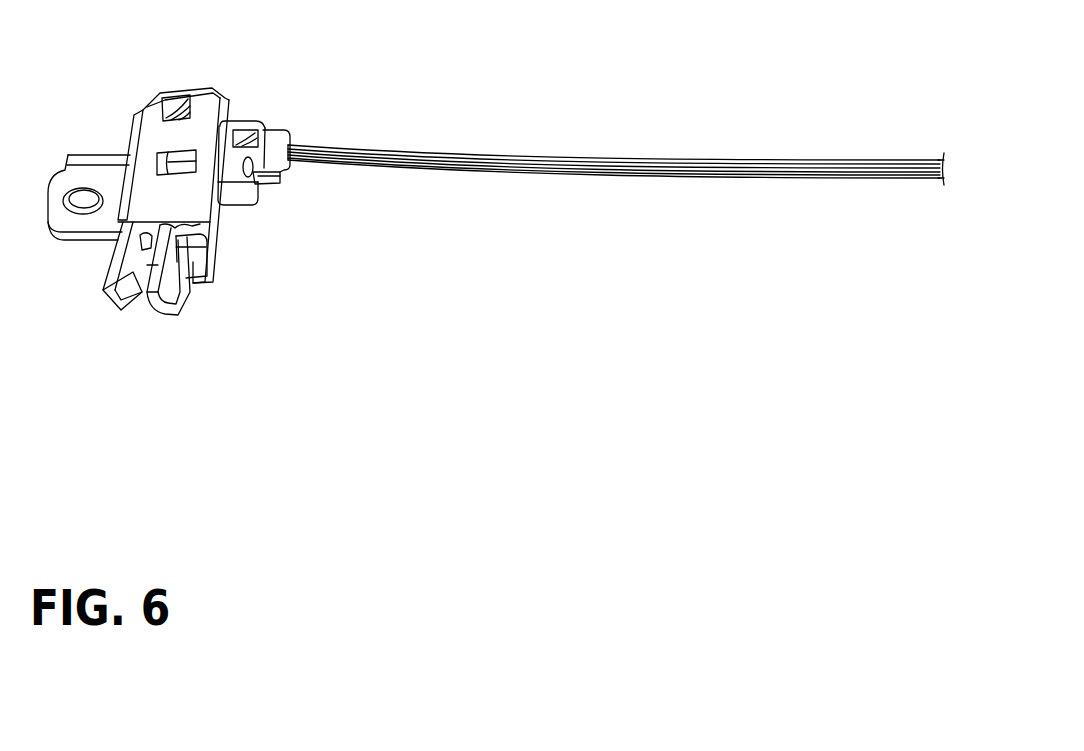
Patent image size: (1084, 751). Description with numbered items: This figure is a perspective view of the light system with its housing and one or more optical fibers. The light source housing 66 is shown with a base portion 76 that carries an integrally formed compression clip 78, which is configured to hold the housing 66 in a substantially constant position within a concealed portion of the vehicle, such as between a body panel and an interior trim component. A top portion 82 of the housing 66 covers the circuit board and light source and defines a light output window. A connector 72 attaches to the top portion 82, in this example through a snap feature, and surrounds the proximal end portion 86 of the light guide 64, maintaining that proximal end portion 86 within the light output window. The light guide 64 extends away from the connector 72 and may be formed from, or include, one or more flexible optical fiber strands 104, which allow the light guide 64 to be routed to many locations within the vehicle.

The light source housing 66 is at (142, 108).
The base portion 76 is at (128, 140).
The connector 72 is at (273, 150).
The optical fiber strands 104 is at (662, 175).
The light guide 64 is at (543, 175).
The proximal end portion 86 is at (275, 185).
The top portion 82 is at (213, 240).
The compression clip 78 is at (125, 300).